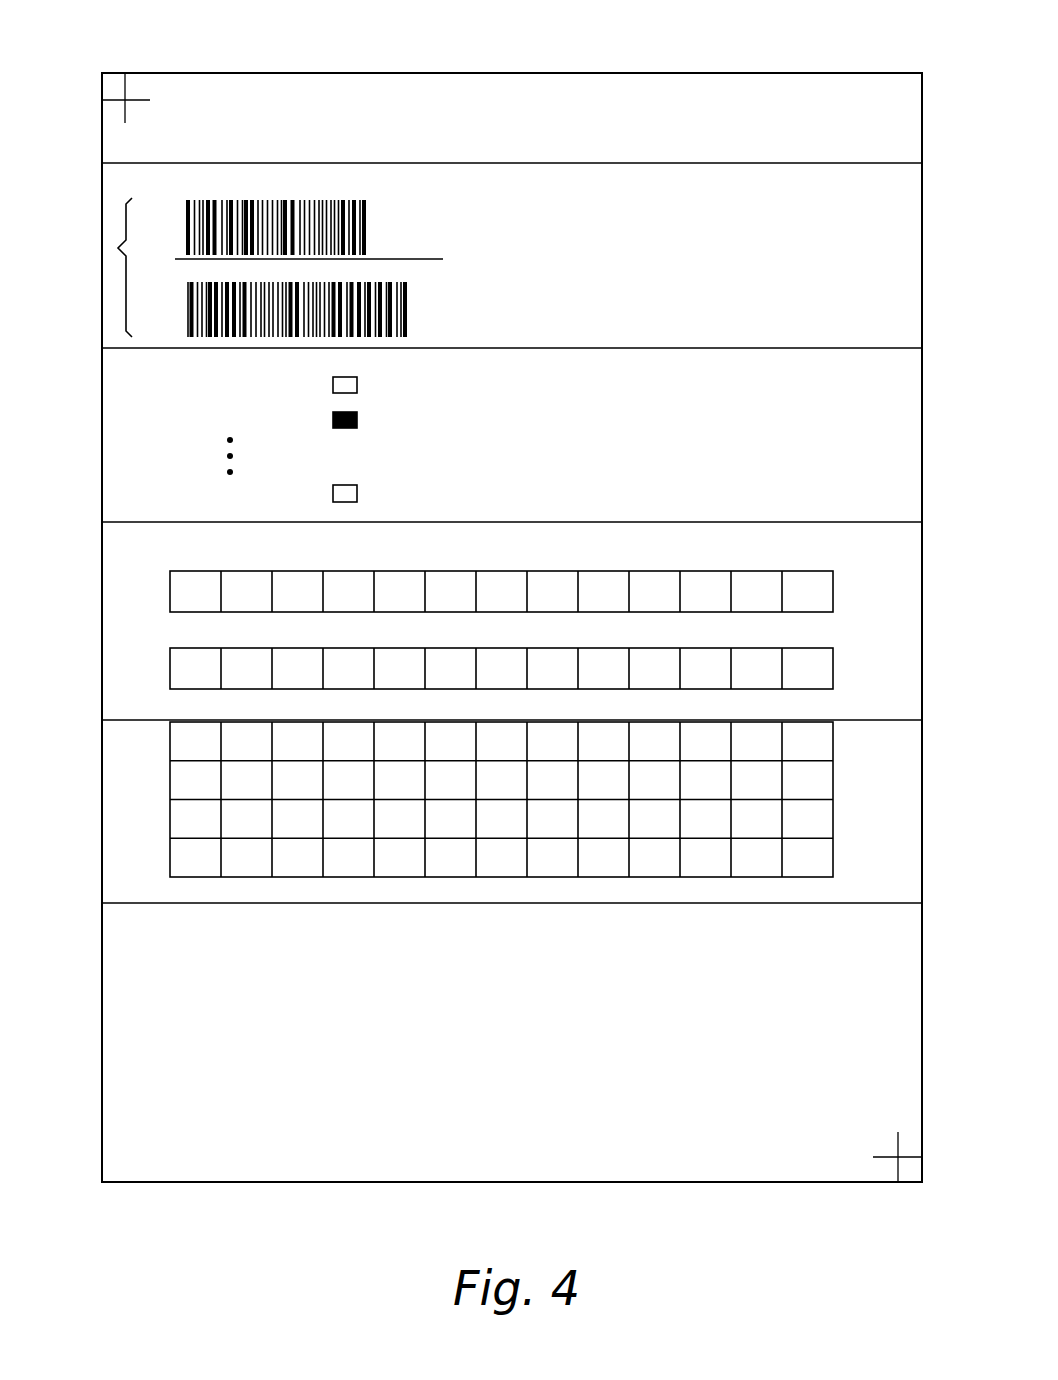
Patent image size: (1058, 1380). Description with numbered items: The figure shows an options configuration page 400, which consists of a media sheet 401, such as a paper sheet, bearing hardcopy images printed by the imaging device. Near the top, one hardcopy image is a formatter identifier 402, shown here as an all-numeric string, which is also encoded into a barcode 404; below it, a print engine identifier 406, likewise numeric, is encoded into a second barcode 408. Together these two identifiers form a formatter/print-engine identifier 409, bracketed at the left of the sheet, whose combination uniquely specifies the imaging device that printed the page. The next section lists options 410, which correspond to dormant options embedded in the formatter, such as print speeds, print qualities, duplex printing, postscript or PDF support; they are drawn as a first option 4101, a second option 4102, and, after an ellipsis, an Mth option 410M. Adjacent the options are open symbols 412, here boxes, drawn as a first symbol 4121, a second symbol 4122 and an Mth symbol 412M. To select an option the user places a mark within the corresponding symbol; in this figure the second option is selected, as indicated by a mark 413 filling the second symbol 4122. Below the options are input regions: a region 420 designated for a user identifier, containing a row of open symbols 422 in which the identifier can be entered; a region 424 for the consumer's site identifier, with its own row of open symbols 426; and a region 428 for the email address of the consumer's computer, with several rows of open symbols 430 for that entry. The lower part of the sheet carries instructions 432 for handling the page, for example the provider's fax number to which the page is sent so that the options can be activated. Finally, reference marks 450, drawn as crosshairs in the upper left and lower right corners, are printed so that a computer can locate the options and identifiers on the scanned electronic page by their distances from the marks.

The configuration page 400 is at (726, 73).
The media sheet 401 is at (823, 107).
The formatter identifier 402 is at (628, 222).
The barcode 404 is at (349, 200).
The print engine identifier 406 is at (625, 302).
The barcode 408 is at (187, 282).
The formatter/print-engine identifier 409 is at (118, 248).
The options 410 is at (211, 432).
The option 4101 is at (190, 381).
The option 4102 is at (190, 417).
The option 410M is at (190, 487).
The open symbols 412 is at (390, 427).
The symbol 4121 is at (358, 378).
The symbol 4122 is at (388, 425).
The symbol 412M is at (358, 485).
The mark 413 is at (357, 426).
The region 420 is at (431, 572).
The open symbols 422 is at (654, 587).
The region 424 is at (431, 649).
The open symbols 426 is at (347, 667).
The region 428 is at (431, 782).
The open symbols 430 is at (347, 745).
The instructions 432 is at (168, 935).
The reference marks 450 is at (125, 100).